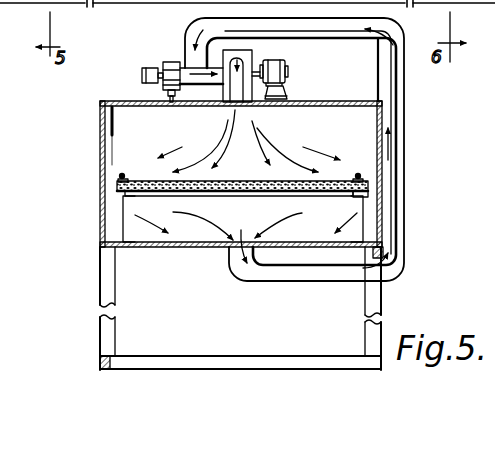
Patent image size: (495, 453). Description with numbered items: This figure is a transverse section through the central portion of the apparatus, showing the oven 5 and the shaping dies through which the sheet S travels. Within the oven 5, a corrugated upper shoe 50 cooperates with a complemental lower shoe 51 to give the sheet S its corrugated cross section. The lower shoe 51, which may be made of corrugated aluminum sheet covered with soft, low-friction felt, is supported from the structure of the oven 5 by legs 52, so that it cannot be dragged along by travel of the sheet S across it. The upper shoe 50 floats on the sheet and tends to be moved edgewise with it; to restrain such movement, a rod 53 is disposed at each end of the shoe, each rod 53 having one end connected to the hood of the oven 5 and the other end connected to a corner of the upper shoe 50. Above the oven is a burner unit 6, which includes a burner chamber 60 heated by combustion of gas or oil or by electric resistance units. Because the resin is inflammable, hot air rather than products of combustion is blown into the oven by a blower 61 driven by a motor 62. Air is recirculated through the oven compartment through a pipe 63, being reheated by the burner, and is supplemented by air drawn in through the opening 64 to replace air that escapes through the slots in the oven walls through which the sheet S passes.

The oven 5 is at (100, 148).
The burner unit 6 is at (180, 36).
The upper shoe 50 is at (141, 182).
The lower shoe 51 is at (264, 197).
The legs 52 is at (123, 212).
The rod 53 is at (110, 180).
The burner chamber 60 is at (158, 64).
The blower 61 is at (253, 62).
The motor 62 is at (278, 68).
The pipe 63 is at (397, 95).
The opening 64 is at (163, 88).
The sheet S is at (220, 180).